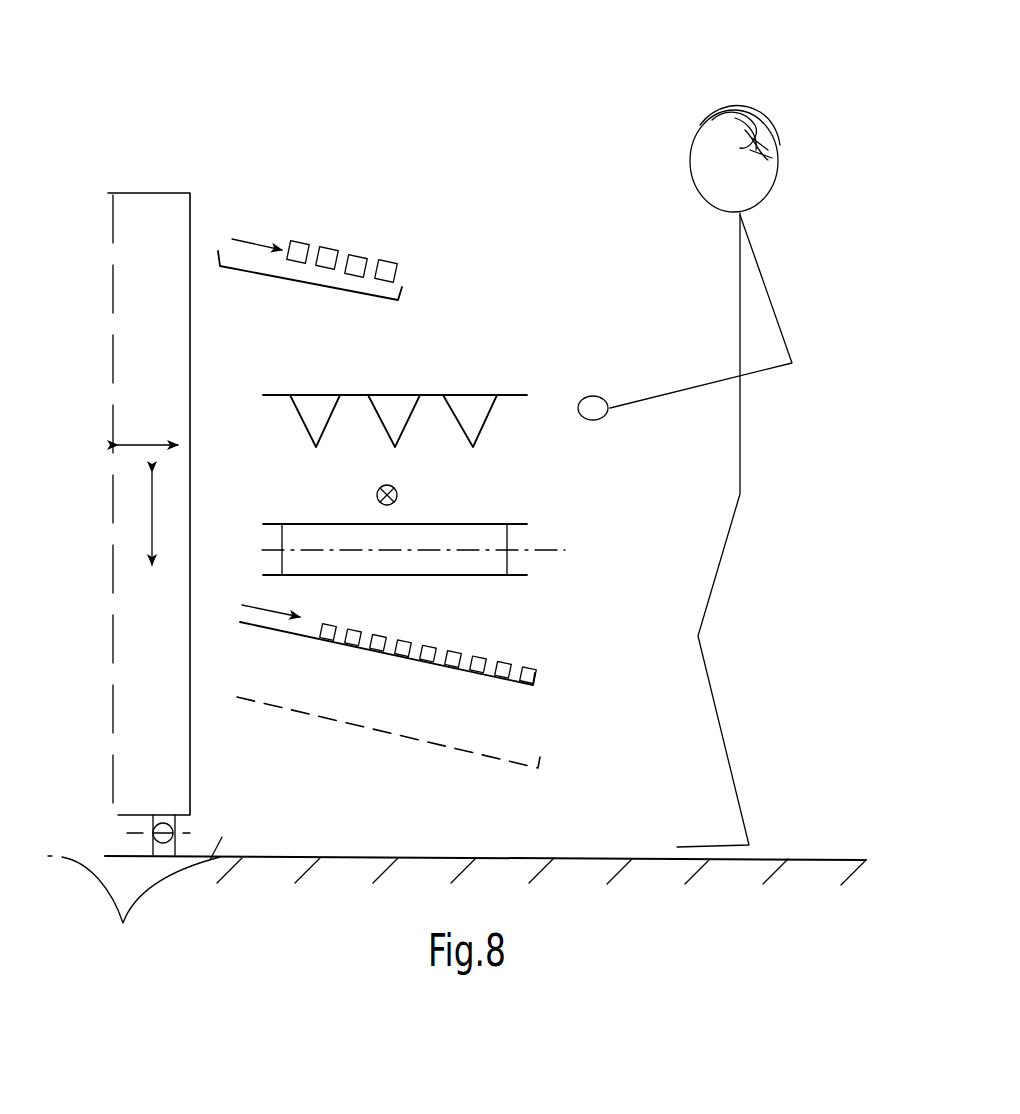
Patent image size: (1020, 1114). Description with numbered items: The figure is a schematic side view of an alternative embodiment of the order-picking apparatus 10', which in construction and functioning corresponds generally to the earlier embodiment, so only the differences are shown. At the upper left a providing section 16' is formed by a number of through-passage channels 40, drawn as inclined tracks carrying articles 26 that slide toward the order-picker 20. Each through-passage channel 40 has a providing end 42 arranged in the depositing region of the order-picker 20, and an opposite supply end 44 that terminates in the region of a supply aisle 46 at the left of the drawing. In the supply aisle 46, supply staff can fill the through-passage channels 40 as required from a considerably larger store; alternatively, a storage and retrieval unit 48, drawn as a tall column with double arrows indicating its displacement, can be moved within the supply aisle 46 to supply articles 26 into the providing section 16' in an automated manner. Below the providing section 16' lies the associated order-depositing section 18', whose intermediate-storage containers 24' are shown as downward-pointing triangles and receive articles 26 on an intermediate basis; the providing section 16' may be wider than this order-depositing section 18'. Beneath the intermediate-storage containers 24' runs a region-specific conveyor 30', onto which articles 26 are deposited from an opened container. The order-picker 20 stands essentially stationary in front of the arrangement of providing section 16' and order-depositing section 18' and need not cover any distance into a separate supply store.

The order-picking apparatus 10' is at (843, 99).
The providing section 16' is at (318, 182).
The order-depositing section 18' is at (395, 372).
The order-picker 20 is at (745, 422).
The intermediate-storage containers 24' is at (402, 439).
The articles 26 is at (360, 258).
The region-specific conveyor 30' is at (418, 529).
The through-passage channels 40 is at (406, 295).
The providing end 42 is at (400, 272).
The supply end 44 is at (243, 213).
The supply aisle 46 is at (457, 896).
The storage and retrieval unit 48 is at (165, 368).